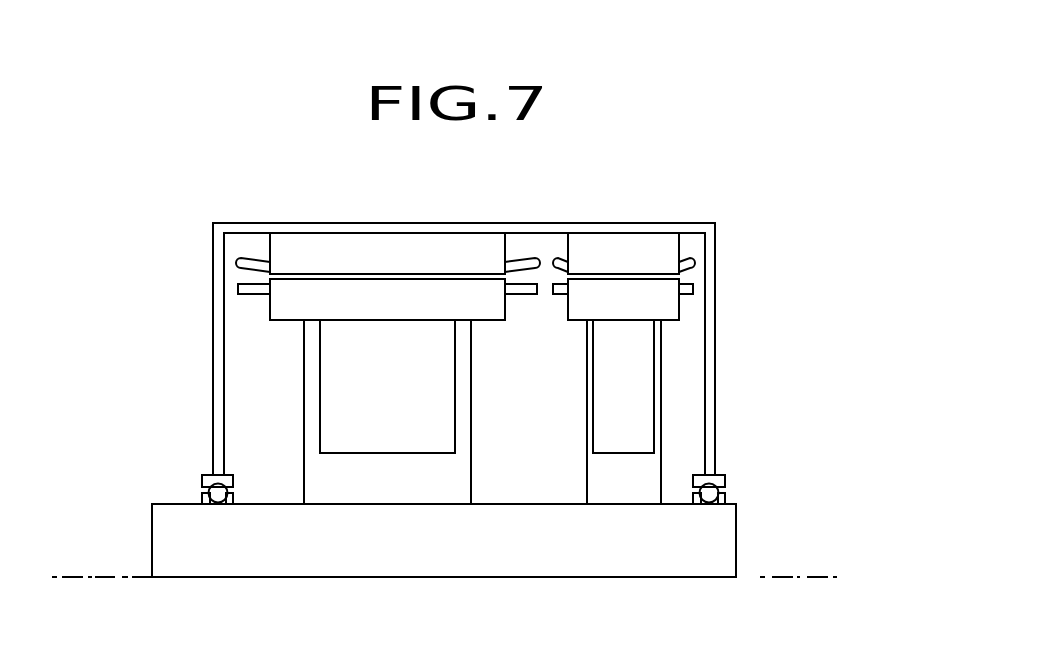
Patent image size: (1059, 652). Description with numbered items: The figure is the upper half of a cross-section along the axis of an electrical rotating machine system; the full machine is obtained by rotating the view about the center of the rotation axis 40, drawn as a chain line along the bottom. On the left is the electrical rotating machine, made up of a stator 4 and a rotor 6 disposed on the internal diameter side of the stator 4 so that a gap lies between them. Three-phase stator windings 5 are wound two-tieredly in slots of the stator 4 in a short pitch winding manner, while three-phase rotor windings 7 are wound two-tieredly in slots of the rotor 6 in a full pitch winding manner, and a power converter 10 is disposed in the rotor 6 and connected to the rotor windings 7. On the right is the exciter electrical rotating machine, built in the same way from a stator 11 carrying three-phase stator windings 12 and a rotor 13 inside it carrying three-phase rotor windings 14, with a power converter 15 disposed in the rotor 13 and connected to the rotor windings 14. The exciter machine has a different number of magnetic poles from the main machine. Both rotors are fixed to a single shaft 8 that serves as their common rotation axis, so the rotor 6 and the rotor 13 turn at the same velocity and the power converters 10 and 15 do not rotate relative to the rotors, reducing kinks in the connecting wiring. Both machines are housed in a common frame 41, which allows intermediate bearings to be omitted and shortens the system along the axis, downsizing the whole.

The stator 4 is at (445, 238).
The stator 11 is at (628, 238).
The three-phase stator windings 5 is at (237, 262).
The three-phase rotor windings 7 is at (238, 289).
The rotor 6 is at (272, 310).
The three-phase stator windings 12 is at (694, 260).
The three-phase rotor windings 14 is at (694, 289).
The rotor 13 is at (670, 311).
The power converter 10 is at (331, 397).
The power converter 15 is at (641, 423).
The shaft 8 is at (180, 504).
The common frame 41 is at (705, 350).
The rotation axis 40 is at (92, 570).